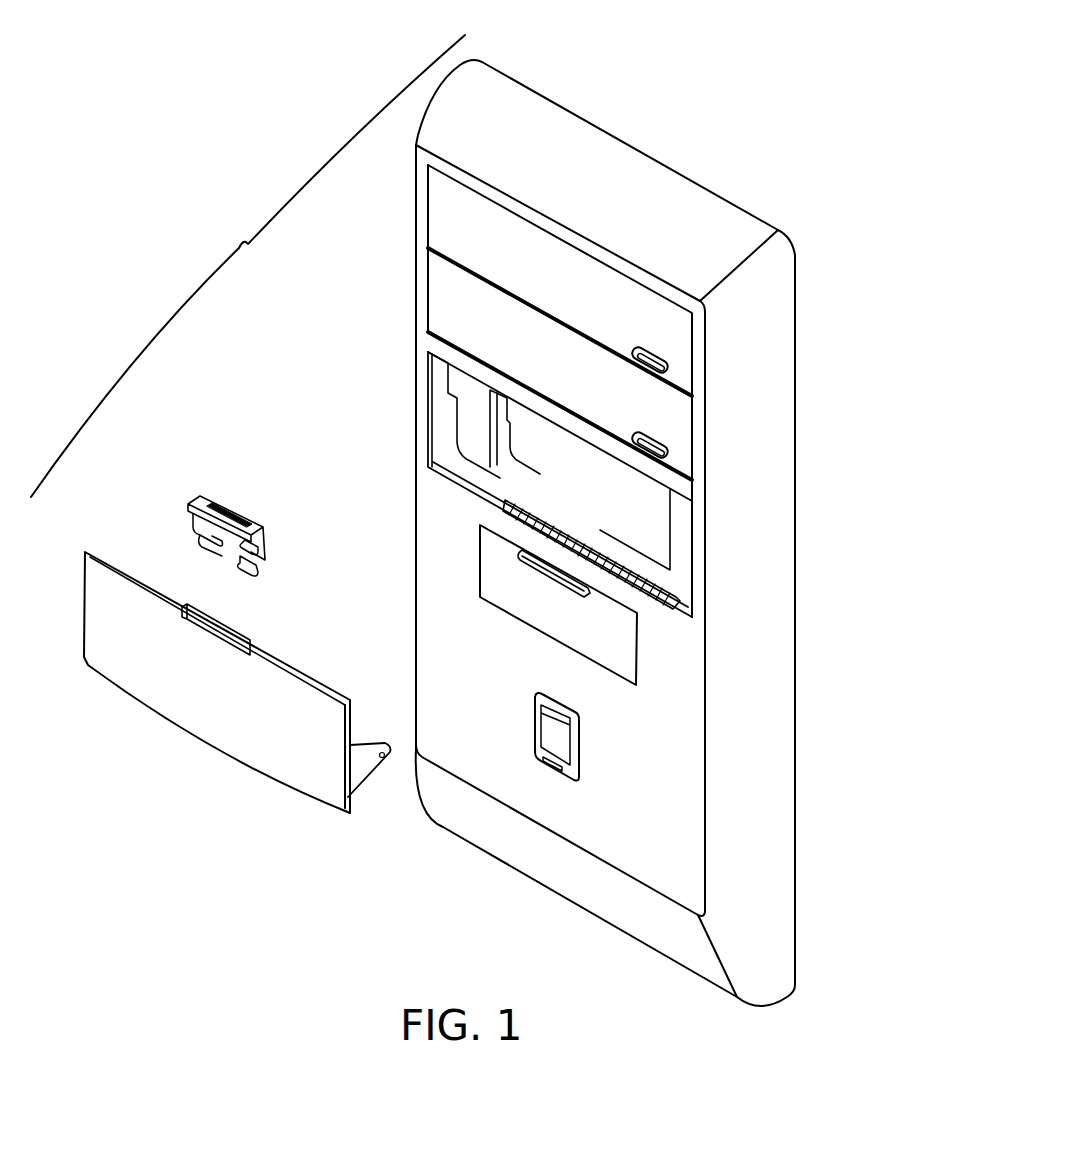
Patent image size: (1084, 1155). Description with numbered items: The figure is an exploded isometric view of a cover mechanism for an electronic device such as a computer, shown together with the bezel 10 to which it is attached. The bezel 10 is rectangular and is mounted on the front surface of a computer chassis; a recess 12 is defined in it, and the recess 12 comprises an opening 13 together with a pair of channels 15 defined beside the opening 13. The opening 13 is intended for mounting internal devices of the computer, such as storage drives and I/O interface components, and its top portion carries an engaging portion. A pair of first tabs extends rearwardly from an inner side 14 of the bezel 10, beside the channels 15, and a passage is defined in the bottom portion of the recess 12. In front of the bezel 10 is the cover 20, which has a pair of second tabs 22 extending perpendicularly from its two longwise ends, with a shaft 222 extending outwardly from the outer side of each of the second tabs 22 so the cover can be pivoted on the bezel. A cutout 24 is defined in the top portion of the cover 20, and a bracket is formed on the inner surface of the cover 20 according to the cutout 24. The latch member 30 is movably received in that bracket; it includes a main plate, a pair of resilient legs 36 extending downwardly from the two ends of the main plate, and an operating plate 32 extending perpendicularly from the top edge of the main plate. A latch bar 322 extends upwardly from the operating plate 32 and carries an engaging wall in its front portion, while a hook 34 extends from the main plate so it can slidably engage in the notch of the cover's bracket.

The bezel 10 is at (628, 133).
The recess 12 is at (470, 483).
The opening 13 is at (647, 507).
The inner side 14 is at (438, 374).
The channels 15 is at (452, 430).
The cover 20 is at (112, 553).
The second tabs 22 is at (357, 780).
The shaft 222 is at (377, 770).
The cutout 24 is at (212, 628).
The latch member 30 is at (221, 521).
The operating plate 32 is at (197, 493).
The latch bar 322 is at (230, 520).
The hook 34 is at (260, 547).
The resilient legs 36 is at (260, 570).